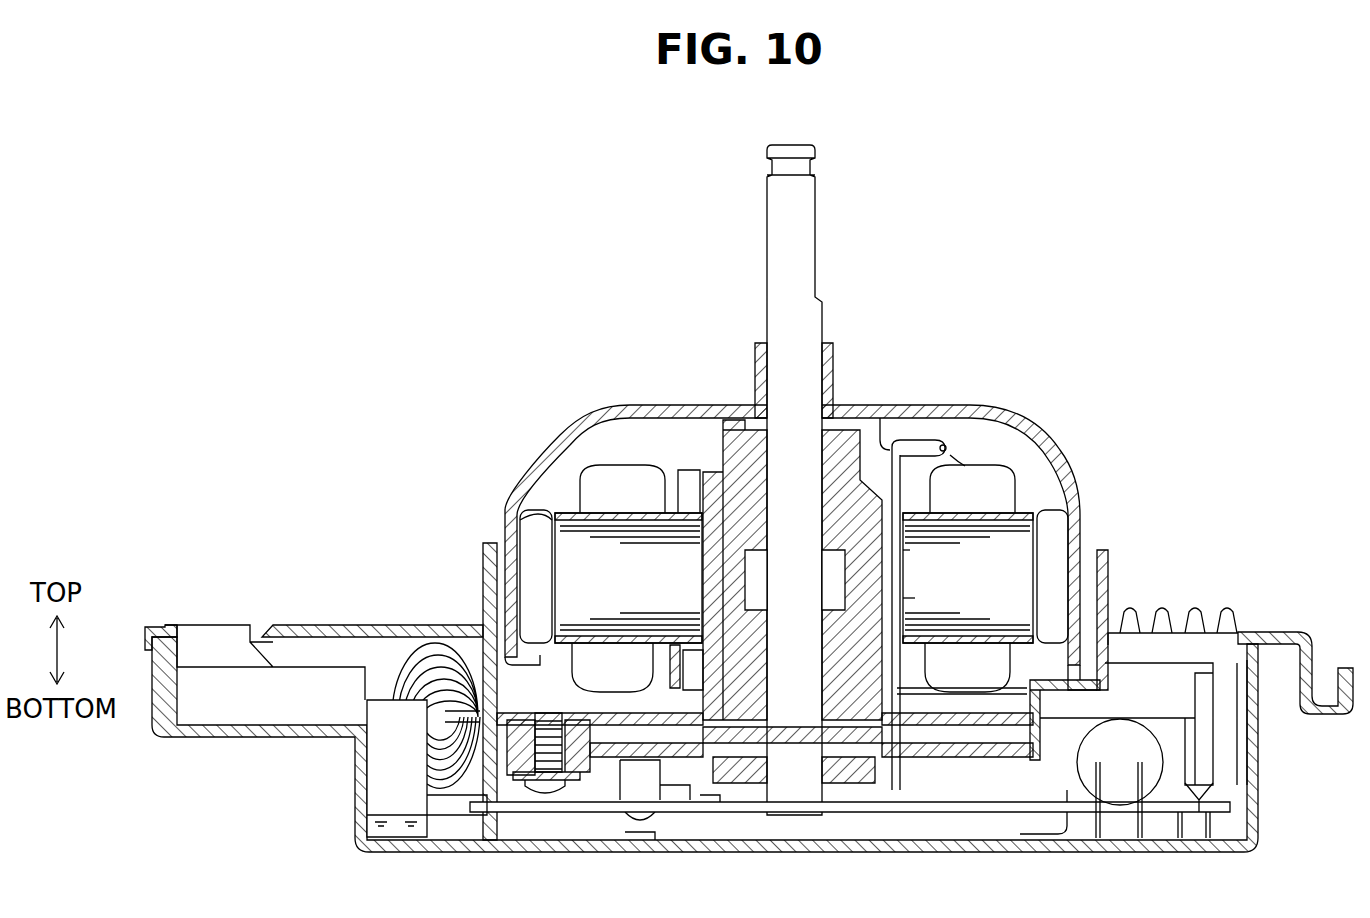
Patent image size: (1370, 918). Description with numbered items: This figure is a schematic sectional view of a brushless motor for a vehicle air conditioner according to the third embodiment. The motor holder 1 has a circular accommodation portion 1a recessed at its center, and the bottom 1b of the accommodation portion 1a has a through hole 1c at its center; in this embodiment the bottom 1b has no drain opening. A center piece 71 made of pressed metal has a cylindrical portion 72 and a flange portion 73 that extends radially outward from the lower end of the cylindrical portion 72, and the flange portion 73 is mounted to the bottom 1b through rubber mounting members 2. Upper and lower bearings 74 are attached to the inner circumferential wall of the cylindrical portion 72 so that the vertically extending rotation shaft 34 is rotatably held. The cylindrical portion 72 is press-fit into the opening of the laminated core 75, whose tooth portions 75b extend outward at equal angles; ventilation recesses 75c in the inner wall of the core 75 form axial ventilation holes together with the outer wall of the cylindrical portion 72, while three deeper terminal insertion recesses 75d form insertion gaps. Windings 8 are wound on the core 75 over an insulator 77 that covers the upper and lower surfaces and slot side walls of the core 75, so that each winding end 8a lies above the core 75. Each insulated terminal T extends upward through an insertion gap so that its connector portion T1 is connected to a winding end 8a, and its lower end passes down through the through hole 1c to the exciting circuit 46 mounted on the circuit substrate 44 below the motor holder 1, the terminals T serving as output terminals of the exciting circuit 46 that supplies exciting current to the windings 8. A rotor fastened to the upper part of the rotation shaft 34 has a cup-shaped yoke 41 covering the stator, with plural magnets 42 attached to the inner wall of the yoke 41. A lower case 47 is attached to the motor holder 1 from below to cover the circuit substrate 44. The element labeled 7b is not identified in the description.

The motor holder 1 is at (346, 625).
The accommodation portion 1a is at (483, 640).
The bottom 1b is at (610, 757).
The through hole 1c is at (670, 800).
The mounting member 2 is at (580, 778).
The rotation shaft 34 is at (822, 215).
The yoke 41 is at (1062, 470).
The magnet 42 is at (1058, 533).
The circuit substrate 44 is at (1158, 812).
The exciting circuit 46 is at (1203, 697).
The lower case 47 is at (526, 848).
The coil winding 7b is at (888, 600).
The winding 8 is at (990, 458).
The winding end 8a is at (958, 452).
The center piece 71 is at (880, 438).
The cylindrical portion 72 is at (723, 572).
The flange portion 73 is at (612, 722).
The bearing 74 is at (768, 720).
The core 75 is at (565, 582).
The tooth portion 75b is at (565, 520).
The ventilation recess 75c is at (690, 510).
The terminal insertion recess 75d is at (905, 553).
The insulator 77 is at (620, 510).
The terminal T is at (935, 615).
The connector portion T1 is at (940, 445).